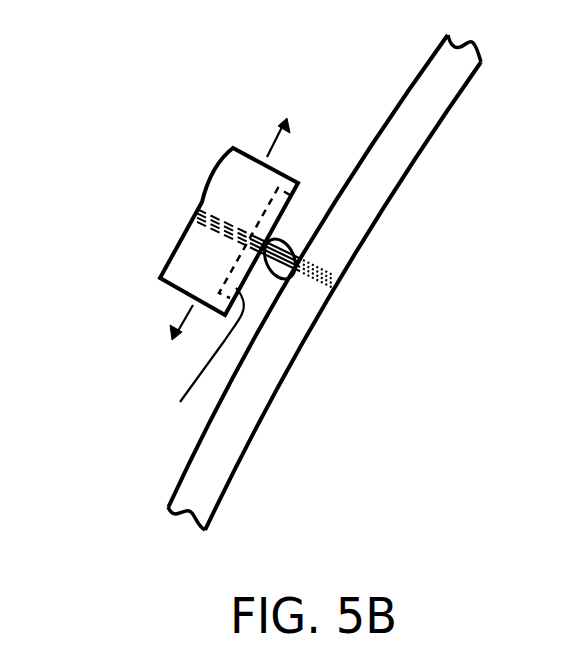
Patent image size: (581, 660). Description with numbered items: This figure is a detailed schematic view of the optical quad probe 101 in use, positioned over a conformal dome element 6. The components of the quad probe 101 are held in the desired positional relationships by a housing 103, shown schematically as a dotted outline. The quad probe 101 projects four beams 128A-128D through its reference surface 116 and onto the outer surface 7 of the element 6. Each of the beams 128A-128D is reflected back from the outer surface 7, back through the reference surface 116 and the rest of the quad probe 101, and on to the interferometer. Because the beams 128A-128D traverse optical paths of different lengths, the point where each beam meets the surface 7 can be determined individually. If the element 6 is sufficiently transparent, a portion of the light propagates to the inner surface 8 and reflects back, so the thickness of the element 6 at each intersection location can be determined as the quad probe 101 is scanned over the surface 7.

The conformal dome element 6 is at (463, 43).
The outer surface 7 is at (185, 473).
The inner surface 8 is at (352, 263).
The optical quad probe 101 is at (150, 252).
The housing 103 is at (177, 290).
The reference surface 116 is at (201, 360).
The four beams 128A-128D is at (285, 238).